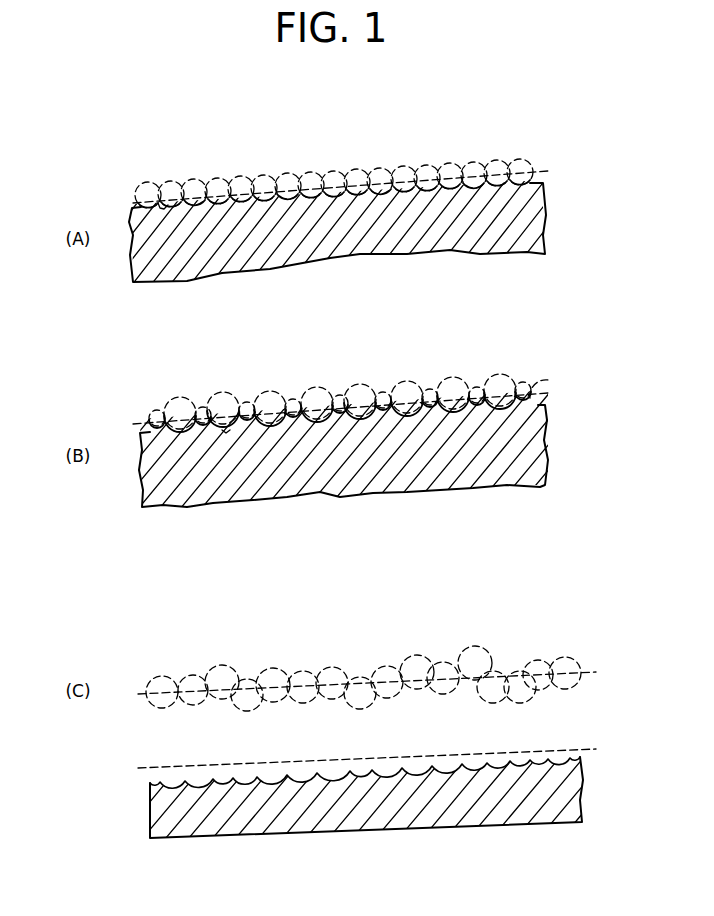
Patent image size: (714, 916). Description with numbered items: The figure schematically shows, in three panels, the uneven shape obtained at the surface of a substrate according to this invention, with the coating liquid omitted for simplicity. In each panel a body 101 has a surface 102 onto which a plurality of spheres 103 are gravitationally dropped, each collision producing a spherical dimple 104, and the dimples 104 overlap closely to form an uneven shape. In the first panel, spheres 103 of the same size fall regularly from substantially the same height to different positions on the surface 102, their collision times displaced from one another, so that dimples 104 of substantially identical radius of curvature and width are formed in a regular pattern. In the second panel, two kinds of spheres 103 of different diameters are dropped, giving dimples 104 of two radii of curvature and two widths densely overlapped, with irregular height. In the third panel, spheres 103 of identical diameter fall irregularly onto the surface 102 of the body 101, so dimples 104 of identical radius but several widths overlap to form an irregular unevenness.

The body 101 is at (545, 218).
The surface 102 is at (542, 170).
The sphere 103 is at (180, 180).
The dimple 104 is at (161, 212).